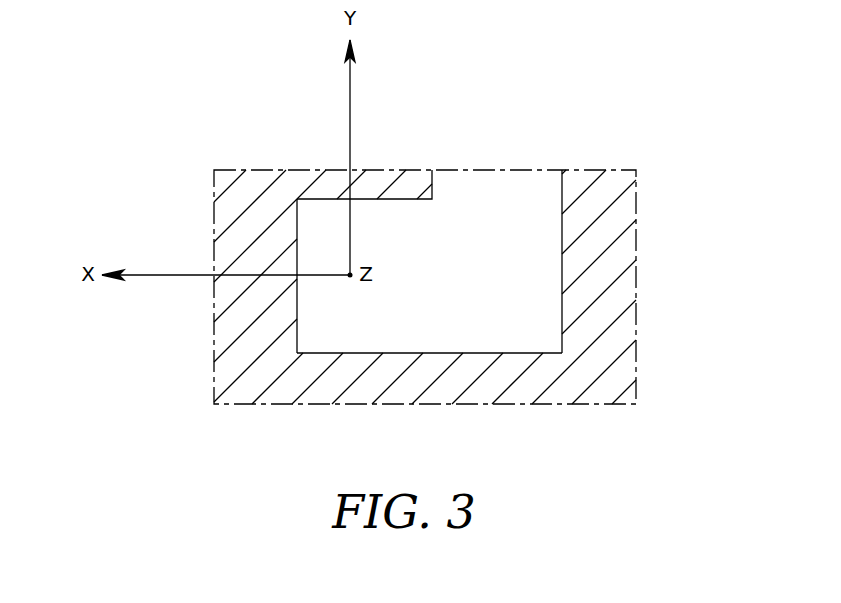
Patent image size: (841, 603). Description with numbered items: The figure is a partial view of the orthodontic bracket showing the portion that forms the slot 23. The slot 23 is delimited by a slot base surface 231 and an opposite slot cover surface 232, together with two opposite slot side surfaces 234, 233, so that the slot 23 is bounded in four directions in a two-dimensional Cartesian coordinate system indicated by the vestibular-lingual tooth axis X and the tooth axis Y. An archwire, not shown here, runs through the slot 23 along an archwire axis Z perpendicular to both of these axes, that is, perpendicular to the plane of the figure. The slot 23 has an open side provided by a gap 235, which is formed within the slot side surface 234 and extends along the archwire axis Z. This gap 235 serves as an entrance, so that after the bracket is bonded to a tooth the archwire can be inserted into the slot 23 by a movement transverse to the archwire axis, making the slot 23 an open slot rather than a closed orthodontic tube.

The slot 23 is at (497, 252).
The slot base surface 231 is at (292, 285).
The slot cover surface 232 is at (563, 259).
The slot side surface 233 is at (397, 353).
The slot side surface 234 is at (357, 197).
The gap 235 is at (481, 198).